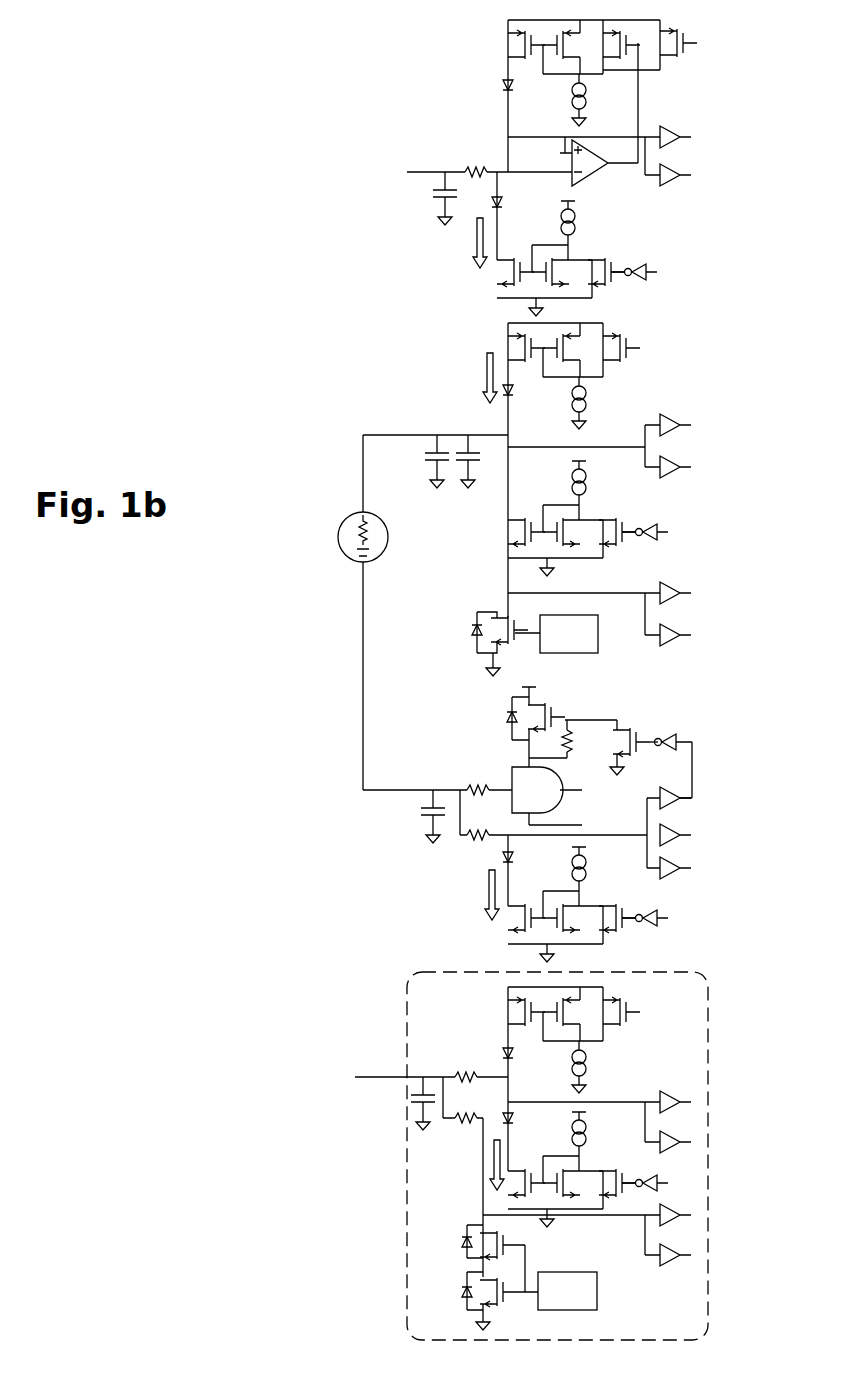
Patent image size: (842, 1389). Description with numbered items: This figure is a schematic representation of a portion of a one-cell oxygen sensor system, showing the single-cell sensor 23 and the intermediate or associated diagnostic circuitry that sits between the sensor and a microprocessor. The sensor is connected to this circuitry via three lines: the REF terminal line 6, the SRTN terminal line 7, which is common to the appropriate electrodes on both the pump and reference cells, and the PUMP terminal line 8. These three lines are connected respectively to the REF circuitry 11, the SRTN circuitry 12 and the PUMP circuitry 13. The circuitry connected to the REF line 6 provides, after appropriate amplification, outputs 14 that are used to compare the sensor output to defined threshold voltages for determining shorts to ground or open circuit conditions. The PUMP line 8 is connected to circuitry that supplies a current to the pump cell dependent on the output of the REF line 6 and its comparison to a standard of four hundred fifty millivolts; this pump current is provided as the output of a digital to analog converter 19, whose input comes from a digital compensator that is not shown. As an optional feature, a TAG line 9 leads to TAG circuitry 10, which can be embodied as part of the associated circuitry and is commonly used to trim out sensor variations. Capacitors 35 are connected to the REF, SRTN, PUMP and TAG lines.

The REF terminal line 6 is at (421, 168).
The SRTN terminal line 7 is at (386, 433).
The PUMP terminal line 8 is at (393, 789).
The TAG line 9 is at (377, 1079).
The TAG circuitry 10 is at (405, 1240).
The REF terminal circuitry 11 is at (742, 12).
The SRTN terminal circuitry 12 is at (742, 320).
The PUMP terminal circuitry 13 is at (742, 690).
The outputs 14 is at (700, 125).
The digital to analog converter 19 is at (512, 780).
The 1-cell sensor 23 is at (338, 537).
The capacitors 35 is at (433, 192).